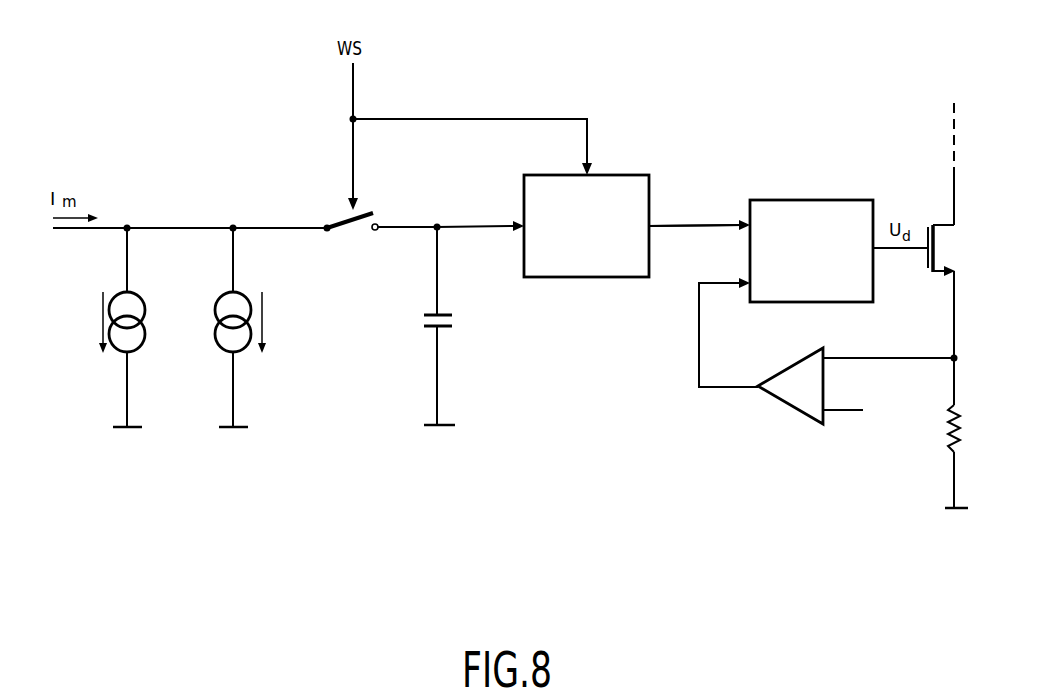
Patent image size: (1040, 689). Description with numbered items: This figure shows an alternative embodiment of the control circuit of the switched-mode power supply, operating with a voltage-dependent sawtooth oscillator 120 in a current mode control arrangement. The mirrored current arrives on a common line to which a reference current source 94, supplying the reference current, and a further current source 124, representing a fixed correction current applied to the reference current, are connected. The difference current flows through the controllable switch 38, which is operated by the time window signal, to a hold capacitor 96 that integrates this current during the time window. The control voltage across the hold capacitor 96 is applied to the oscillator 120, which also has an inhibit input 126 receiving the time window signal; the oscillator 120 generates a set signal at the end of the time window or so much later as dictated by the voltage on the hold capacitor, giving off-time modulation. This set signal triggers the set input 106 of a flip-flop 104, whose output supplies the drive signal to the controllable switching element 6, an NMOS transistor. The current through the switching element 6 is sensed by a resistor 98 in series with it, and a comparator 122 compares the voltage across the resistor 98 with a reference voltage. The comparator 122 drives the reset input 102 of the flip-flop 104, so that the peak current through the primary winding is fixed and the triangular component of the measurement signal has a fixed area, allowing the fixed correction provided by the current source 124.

The controllable switching element 6 is at (942, 246).
The controllable switch 38 is at (367, 208).
The reference current source 94 is at (120, 292).
The hold capacitor 96 is at (423, 320).
The resistor 98 is at (966, 438).
The reset input 102 is at (745, 292).
The flip-flop 104 is at (848, 302).
The set input 106 is at (747, 217).
The voltage-dependent sawtooth oscillator 120 is at (573, 278).
The comparator 122 is at (794, 409).
The current source 124 is at (226, 292).
The inhibit input 126 is at (592, 172).